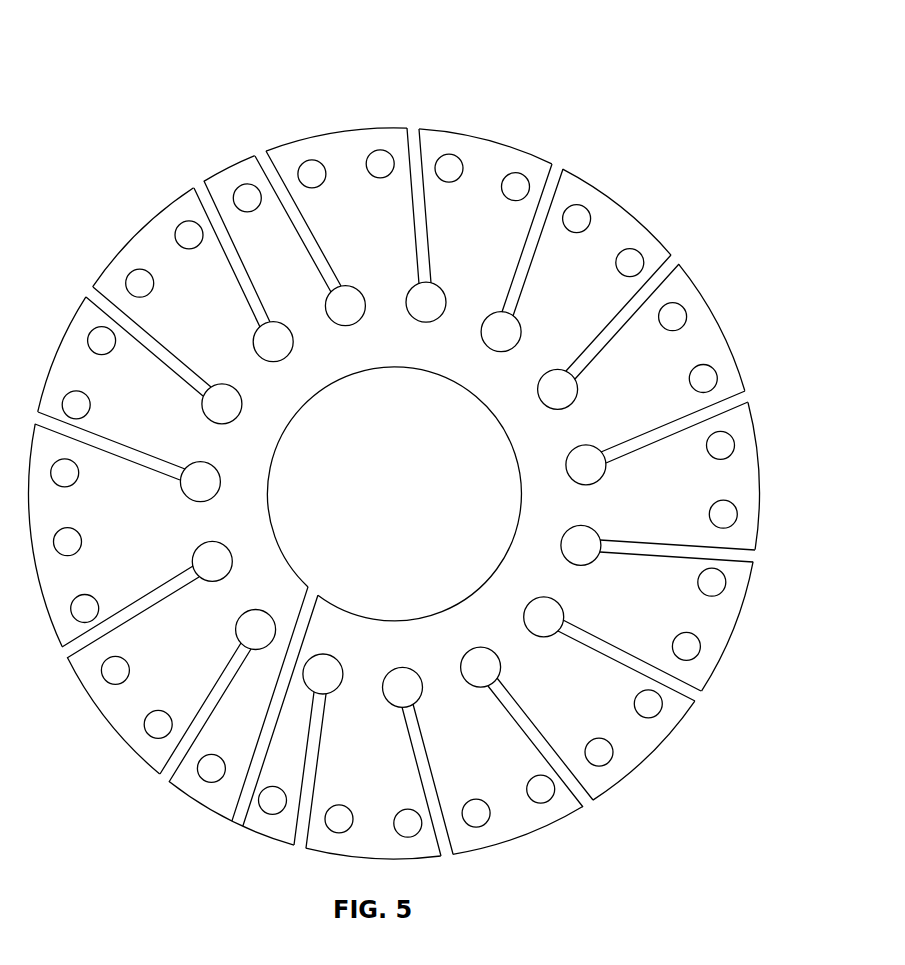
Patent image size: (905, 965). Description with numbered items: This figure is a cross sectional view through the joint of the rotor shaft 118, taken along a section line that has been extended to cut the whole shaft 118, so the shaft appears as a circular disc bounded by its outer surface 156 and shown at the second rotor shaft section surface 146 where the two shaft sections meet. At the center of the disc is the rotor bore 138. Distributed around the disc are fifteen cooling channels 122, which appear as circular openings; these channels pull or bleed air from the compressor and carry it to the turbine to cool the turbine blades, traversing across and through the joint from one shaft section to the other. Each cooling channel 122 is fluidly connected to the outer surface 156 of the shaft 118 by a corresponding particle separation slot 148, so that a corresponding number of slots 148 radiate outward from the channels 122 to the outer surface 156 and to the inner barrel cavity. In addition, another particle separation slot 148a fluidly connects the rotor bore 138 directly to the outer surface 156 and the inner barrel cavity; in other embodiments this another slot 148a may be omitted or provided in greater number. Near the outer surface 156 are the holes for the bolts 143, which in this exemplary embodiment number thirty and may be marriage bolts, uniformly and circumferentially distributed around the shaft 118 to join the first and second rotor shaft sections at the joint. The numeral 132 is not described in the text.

The shaft 118 is at (121, 44).
The outer rim 132 is at (598, 182).
The outer surface 156 is at (479, 134).
The second rotor shaft section surface 146 is at (171, 420).
The rotor bore 138 is at (416, 504).
The particle separation slots 148 is at (312, 231).
The another particle separation slot 148a is at (312, 624).
The cooling channels 122 is at (294, 346).
The bolts 143 is at (184, 222).